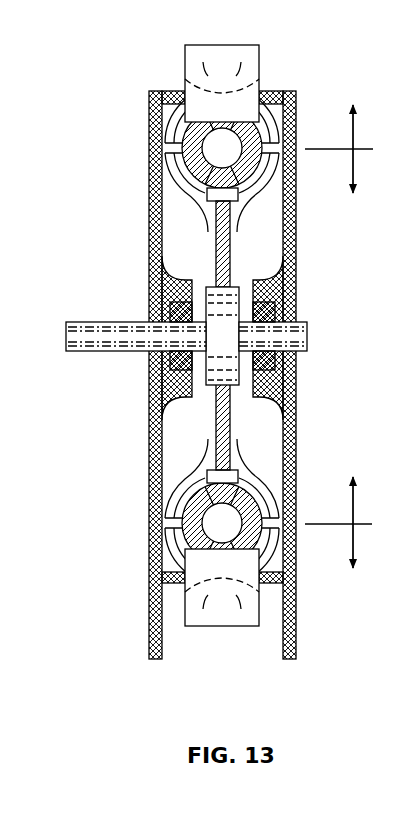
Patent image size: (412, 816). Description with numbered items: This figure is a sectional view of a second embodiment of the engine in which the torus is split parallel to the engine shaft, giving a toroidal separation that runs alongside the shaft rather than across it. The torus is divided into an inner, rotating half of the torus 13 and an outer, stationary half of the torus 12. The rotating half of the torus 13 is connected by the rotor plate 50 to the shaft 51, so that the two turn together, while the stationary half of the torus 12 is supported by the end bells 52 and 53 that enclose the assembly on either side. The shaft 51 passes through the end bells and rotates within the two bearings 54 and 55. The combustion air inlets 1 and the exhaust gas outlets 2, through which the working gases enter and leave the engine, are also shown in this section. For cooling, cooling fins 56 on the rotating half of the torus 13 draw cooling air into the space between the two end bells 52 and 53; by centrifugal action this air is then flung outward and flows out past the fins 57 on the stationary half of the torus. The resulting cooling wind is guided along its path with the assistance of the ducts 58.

The combustion air inlet 1 is at (165, 330).
The exhaust gas outlet 2 is at (180, 335).
The outer stationary half of the torus 12 is at (339, 337).
The inner rotating half of the torus 13 is at (338, 382).
The rotor plate 50 is at (216, 254).
The shaft 51 is at (132, 352).
The end bell 52 is at (149, 478).
The end bell 53 is at (298, 407).
The bearing 54 is at (170, 302).
The bearing 55 is at (275, 301).
The cooling fins 56 is at (200, 197).
The fins 57 is at (197, 95).
The duct 58 is at (167, 183).